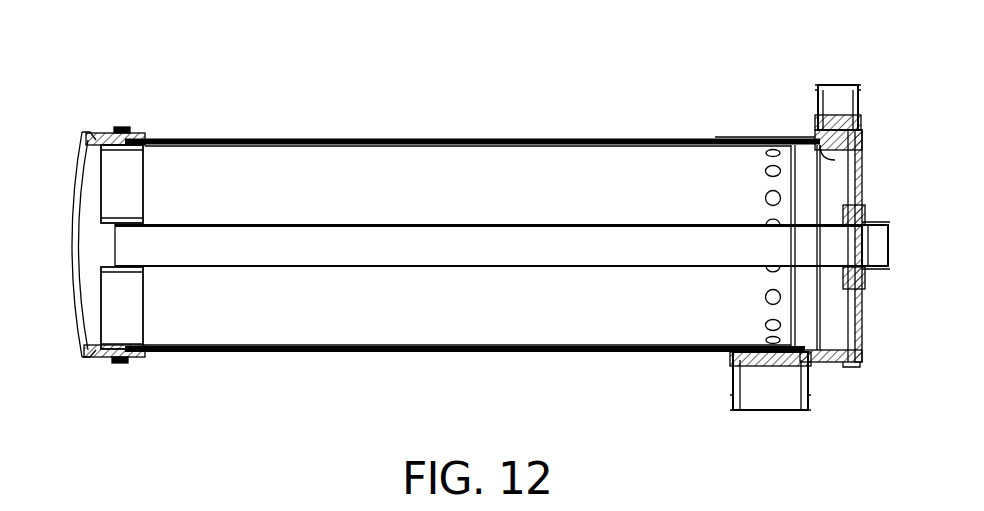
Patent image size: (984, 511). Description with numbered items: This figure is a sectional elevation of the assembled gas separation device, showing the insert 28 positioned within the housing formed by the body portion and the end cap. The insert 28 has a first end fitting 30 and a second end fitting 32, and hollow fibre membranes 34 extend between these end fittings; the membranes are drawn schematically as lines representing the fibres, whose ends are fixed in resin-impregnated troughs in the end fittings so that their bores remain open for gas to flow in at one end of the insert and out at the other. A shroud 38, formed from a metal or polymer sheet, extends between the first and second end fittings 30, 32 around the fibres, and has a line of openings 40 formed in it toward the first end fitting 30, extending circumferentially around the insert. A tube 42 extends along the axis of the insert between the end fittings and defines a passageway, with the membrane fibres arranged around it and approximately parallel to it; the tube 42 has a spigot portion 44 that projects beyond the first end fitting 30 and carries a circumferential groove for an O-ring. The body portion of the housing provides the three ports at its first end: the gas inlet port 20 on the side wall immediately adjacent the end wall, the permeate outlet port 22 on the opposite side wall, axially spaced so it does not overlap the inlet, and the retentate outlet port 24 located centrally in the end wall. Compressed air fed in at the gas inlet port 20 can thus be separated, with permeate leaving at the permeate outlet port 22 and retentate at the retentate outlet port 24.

The gas inlet port 20 is at (840, 92).
The permeate outlet port 22 is at (768, 400).
The retentate outlet port 24 is at (880, 247).
The insert 28 is at (562, 168).
The first end fitting 30 is at (818, 170).
The second end fitting 32 is at (101, 177).
The hollow fibre membranes 34 is at (453, 210).
The shroud 38 is at (280, 146).
The openings 40 is at (770, 193).
The tube 42 is at (167, 230).
The spigot portion 44 is at (830, 225).